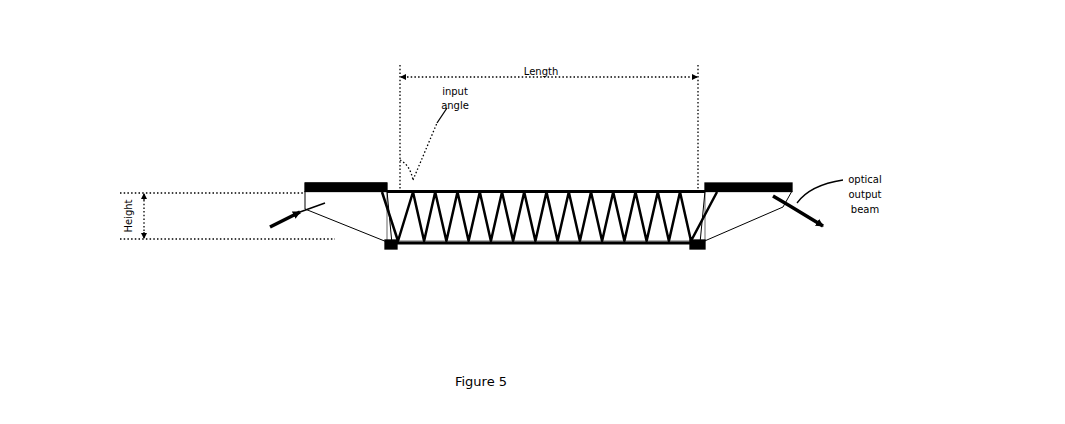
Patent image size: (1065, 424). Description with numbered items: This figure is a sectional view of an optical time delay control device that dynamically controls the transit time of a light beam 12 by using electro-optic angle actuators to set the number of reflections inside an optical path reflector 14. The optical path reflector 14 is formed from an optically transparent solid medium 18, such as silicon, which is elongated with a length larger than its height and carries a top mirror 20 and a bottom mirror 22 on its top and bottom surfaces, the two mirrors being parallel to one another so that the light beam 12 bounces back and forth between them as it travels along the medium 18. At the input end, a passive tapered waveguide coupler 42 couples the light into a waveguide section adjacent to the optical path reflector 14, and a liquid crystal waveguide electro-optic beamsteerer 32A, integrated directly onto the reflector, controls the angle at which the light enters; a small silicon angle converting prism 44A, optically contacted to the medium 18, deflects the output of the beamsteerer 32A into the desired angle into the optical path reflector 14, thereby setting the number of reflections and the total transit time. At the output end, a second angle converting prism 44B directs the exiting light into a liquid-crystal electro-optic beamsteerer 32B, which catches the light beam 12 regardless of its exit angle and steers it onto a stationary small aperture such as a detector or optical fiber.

The light beam 12 is at (277, 210).
The optical path reflector 14 is at (458, 245).
The optically transparent solid medium 18 is at (750, 225).
The top mirror 20 is at (556, 190).
The bottom mirror 22 is at (612, 245).
The liquid crystal waveguide electro-optic beamsteerer 32A is at (368, 181).
The liquid-crystal electro-optic beamsteerer 32B is at (722, 182).
The passive tapered waveguide coupler 42 is at (308, 178).
The angle converting prism 44A is at (385, 243).
The angle converting prism 44B is at (700, 245).